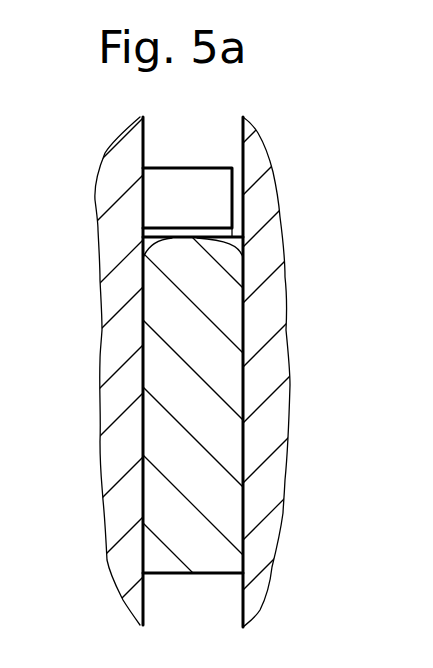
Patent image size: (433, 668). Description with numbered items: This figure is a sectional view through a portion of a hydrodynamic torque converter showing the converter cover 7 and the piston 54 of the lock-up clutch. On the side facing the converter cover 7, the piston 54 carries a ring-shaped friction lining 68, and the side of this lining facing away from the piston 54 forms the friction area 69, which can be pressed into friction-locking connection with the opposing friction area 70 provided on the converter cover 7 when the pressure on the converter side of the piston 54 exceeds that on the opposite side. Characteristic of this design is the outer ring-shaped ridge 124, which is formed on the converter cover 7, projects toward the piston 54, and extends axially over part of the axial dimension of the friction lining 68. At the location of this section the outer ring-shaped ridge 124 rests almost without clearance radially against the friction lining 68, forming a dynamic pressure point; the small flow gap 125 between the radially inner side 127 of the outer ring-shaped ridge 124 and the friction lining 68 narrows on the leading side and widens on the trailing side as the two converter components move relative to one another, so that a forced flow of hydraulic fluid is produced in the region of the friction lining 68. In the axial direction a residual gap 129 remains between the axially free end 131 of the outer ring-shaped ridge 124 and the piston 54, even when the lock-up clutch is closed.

The converter cover 7 is at (105, 362).
The piston 54 is at (272, 228).
The friction lining 68 is at (225, 388).
The friction area 69 is at (143, 350).
The opposing friction area 70 is at (143, 474).
The outer ring-shaped ridge 124 is at (188, 185).
The flow gap 125 is at (243, 258).
The radially inner side 127 is at (143, 261).
The residual gap 129 is at (236, 195).
The axially free end 131 is at (232, 210).